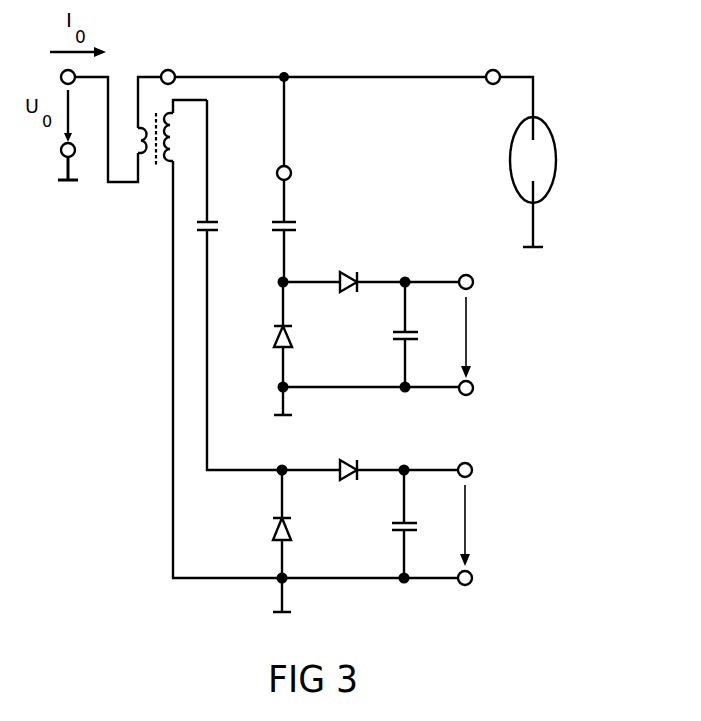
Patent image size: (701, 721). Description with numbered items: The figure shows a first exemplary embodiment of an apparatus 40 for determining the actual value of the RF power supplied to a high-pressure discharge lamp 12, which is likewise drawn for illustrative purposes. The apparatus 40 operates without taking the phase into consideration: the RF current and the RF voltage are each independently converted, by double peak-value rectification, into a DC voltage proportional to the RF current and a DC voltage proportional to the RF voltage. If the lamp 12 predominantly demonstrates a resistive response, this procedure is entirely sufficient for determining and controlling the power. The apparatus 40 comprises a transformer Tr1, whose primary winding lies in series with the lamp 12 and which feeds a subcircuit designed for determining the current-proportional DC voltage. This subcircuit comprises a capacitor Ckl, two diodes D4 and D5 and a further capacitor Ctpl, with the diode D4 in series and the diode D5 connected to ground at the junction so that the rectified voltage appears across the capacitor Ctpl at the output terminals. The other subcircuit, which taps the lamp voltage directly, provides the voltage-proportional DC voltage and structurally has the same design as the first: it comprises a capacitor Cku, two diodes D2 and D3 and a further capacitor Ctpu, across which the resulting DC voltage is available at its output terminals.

The apparatus for determining the actual value of the RF power 40 is at (265, 58).
The high-pressure discharge lamp 12 is at (543, 162).
The transformer Tr1 is at (172, 152).
The capacitor Ckl is at (237, 285).
The capacitor Cku is at (299, 179).
The diode D2 is at (371, 301).
The diode D3 is at (263, 348).
The diode D4 is at (370, 458).
The diode D5 is at (261, 541).
The capacitor Ctpu is at (420, 334).
The capacitor Ctpl is at (418, 524).